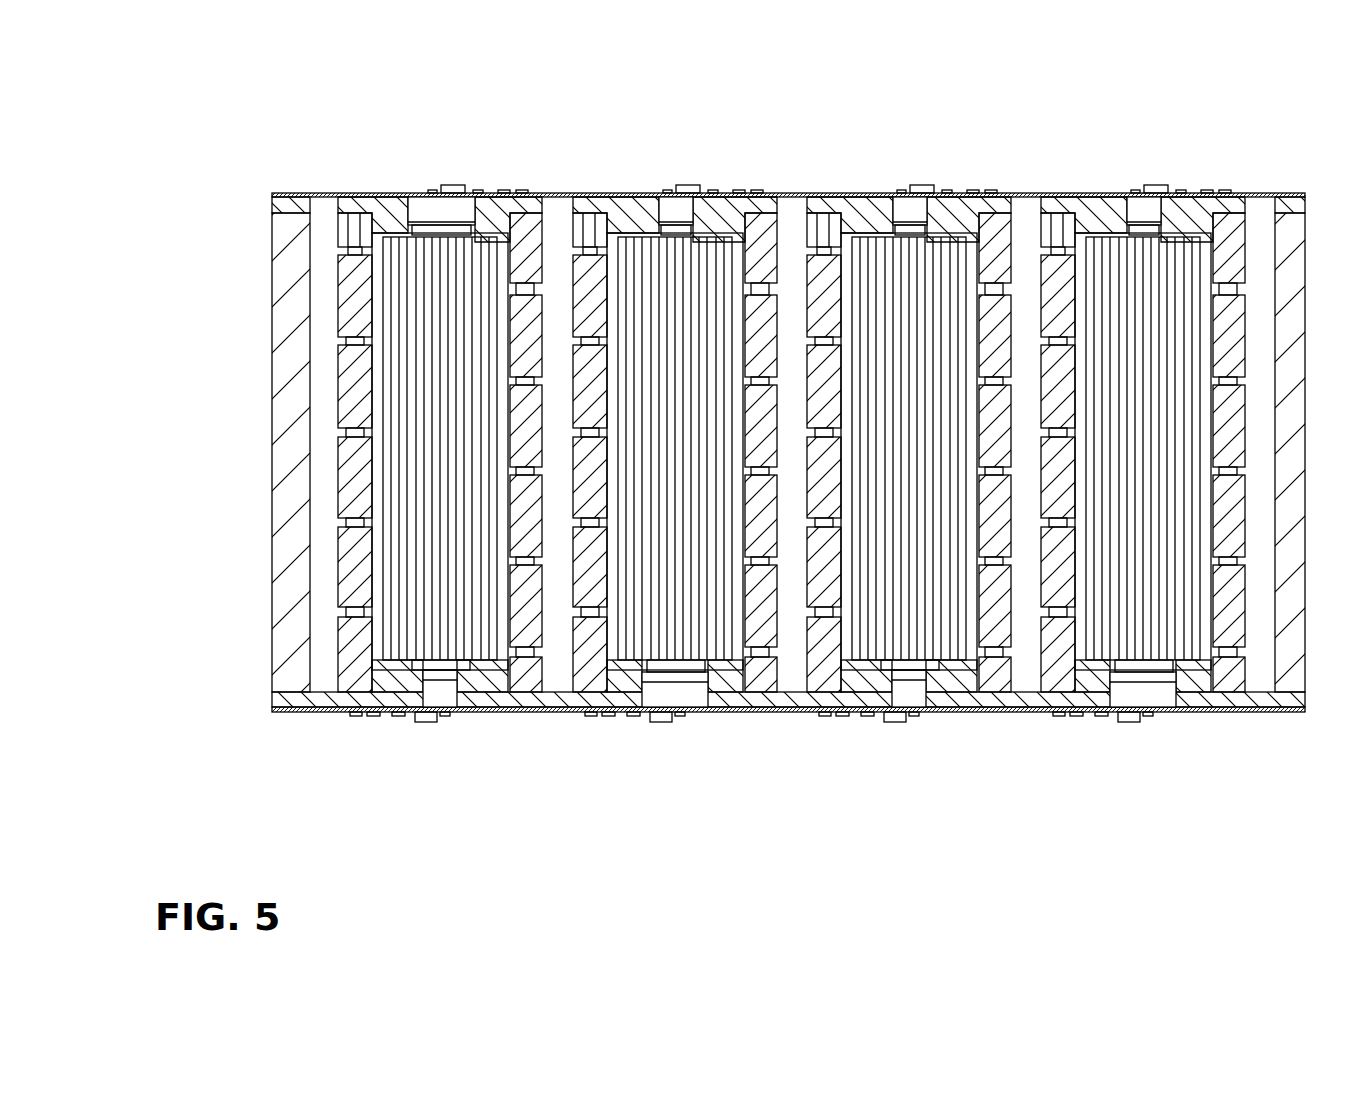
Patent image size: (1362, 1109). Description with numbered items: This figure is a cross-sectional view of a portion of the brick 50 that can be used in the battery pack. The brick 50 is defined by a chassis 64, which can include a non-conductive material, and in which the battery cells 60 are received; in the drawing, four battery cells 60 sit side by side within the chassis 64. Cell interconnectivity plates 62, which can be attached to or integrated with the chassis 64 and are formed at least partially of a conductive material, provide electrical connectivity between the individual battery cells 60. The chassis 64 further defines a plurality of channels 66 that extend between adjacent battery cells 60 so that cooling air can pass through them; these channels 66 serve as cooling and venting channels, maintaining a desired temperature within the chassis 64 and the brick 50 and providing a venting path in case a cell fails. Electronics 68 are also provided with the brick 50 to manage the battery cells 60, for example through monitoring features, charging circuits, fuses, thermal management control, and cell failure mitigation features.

The brick 50 is at (1187, 110).
The battery cells 60 is at (647, 287).
The cell interconnectivity plates 62 is at (336, 193).
The chassis 64 is at (290, 448).
The channels 66 is at (557, 795).
The electronics 68 is at (712, 168).